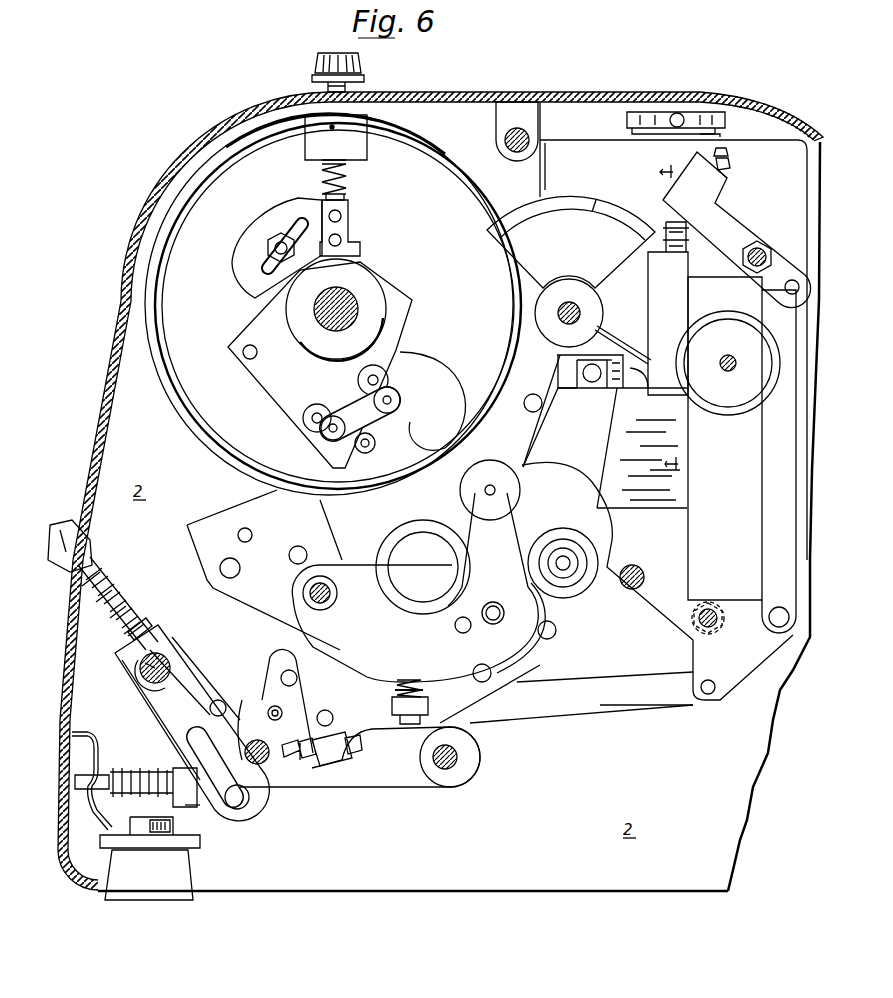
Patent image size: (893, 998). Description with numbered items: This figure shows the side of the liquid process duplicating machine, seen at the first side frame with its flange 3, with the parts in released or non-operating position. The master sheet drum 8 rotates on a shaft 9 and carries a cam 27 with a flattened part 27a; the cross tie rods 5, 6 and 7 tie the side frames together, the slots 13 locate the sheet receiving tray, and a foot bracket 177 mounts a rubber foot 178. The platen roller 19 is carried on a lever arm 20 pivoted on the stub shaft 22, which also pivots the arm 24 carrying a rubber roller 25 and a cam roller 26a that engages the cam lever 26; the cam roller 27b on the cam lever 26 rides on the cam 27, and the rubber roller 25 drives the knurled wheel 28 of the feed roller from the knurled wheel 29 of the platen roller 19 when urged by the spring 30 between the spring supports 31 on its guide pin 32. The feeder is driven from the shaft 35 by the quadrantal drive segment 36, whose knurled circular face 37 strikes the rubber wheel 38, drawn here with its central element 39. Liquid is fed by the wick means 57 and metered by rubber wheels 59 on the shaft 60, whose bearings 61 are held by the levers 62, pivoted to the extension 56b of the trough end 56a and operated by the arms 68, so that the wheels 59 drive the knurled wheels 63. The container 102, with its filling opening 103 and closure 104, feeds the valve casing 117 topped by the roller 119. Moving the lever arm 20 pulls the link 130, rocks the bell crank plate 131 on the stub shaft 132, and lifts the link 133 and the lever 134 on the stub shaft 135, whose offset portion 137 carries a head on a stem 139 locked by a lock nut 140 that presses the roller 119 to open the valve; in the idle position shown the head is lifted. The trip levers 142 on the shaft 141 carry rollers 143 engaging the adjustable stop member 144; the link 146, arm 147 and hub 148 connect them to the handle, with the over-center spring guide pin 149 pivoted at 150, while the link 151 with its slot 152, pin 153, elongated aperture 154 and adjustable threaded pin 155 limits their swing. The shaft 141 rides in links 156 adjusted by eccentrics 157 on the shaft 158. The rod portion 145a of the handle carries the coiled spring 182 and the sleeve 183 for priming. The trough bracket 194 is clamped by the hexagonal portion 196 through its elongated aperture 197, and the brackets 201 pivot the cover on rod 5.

The flange 3 is at (123, 272).
The cross tie rod 5 is at (505, 141).
The cross tie rod 6 is at (641, 579).
The cross tie rod 7 is at (143, 672).
The master sheet drum 8 is at (166, 398).
The shaft 9 is at (335, 290).
The slots 13 is at (659, 319).
The platen roller 19 is at (386, 535).
The lever arm 20 is at (540, 673).
The stub shaft 22 is at (334, 597).
The arm 24 is at (453, 656).
The rubber roller 25 is at (528, 647).
The cam lever 26 is at (440, 409).
The cam roller 26a is at (461, 489).
The cam 27 is at (388, 298).
The flattened part 27a is at (386, 322).
The cam roller 27b is at (378, 372).
The knurled wheel 28 is at (554, 538).
The knurled wheel 29 is at (435, 565).
The spring 30 is at (397, 687).
The spring supports 31 is at (392, 707).
The guide pin 32 is at (421, 691).
The shaft 35 is at (569, 303).
The quadrantal drive segment 36 is at (590, 247).
The circular face 37 is at (604, 195).
The rubber wheel 38 is at (738, 346).
The dial shaft 39 is at (728, 372).
The trough end 56a is at (642, 448).
The extension 56b is at (570, 448).
The wick means 57 is at (626, 352).
The rubber wheels 59 is at (622, 364).
The shaft 60 is at (589, 383).
The bearings 61 is at (604, 392).
The levers 62 is at (550, 391).
The knurled wheels 63 is at (638, 390).
The arms 68 is at (472, 523).
The container 102 is at (600, 165).
The filling opening 103 is at (722, 131).
The closure 104 is at (627, 117).
The valve casing 117 is at (681, 299).
The roller 119 is at (667, 222).
The link 130 is at (635, 700).
The bell crank plate 131 is at (752, 661).
The stub shaft 132 is at (699, 614).
The link 133 is at (775, 443).
The lever 134 is at (720, 215).
The stub shaft 135 is at (762, 256).
The offset portion 137 is at (728, 190).
The stem 139 is at (727, 157).
The lock nut 140 is at (729, 170).
The shaft 141 is at (282, 785).
The trip lever 142 is at (270, 736).
The roller 143 is at (297, 693).
The adjustable stop member 144 is at (286, 762).
The rod portion 145a is at (96, 578).
The link 146 is at (247, 702).
The arm 147 is at (196, 660).
The hub 148 is at (175, 644).
The over-center spring guide pin 149 is at (150, 770).
The pivot connection 150 is at (208, 800).
The link 151 is at (152, 708).
The slot 152 is at (198, 745).
The pin 153 is at (245, 810).
The elongated aperture 154 is at (160, 683).
The adjustable threaded pin 155 is at (138, 626).
The links 156 is at (401, 788).
The eccentrics 157 is at (462, 770).
The shaft 158 is at (462, 758).
The foot bracket 177 is at (200, 848).
The rubber foot 178 is at (158, 875).
The coiled spring 182 is at (110, 594).
The sleeve 183 is at (69, 560).
The bracket 194 is at (662, 537).
The hexagonal portion 196 is at (694, 622).
The elongated aperture 197 is at (712, 608).
The brackets 201 is at (496, 119).